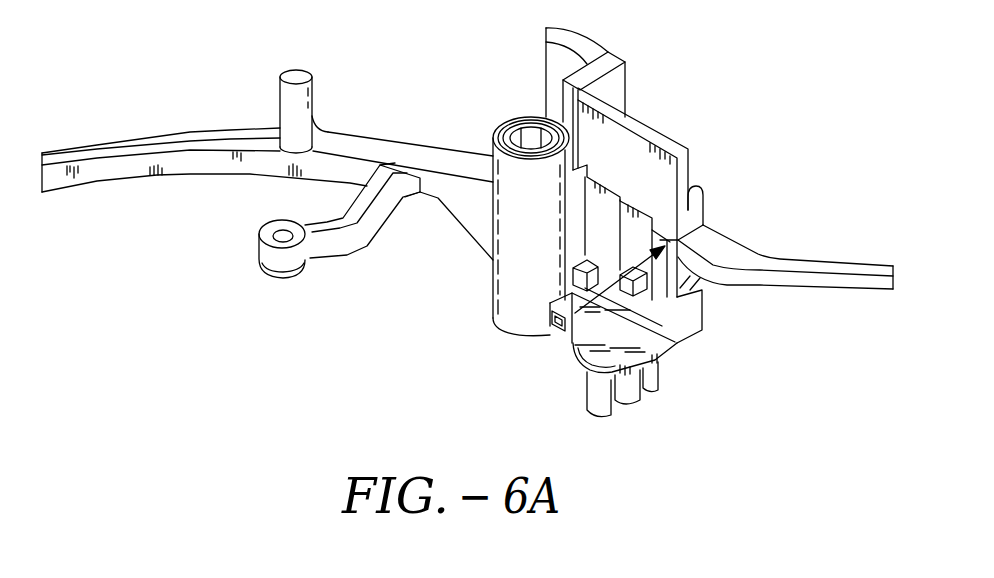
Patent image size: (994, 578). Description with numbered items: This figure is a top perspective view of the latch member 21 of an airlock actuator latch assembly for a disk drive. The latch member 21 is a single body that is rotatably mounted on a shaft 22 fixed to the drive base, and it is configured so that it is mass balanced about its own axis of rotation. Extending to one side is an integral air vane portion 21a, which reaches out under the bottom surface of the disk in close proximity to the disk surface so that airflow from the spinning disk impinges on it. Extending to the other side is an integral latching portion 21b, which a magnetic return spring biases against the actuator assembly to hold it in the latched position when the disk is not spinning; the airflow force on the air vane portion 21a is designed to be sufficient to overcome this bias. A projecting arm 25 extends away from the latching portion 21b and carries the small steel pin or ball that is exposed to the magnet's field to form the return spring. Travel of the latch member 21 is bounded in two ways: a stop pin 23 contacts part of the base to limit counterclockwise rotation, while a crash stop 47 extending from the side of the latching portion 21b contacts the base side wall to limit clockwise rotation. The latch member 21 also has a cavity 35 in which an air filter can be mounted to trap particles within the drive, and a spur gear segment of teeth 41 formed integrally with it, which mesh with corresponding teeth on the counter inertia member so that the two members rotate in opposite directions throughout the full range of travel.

The latch member 21 is at (802, 54).
The air vane portion 21a is at (846, 262).
The latching portion 21b is at (118, 173).
The shaft 22 is at (520, 126).
The stop pin 23 is at (298, 70).
The projecting arm 25 is at (358, 257).
The cavity 35 is at (562, 318).
The gear teeth 41 is at (612, 403).
The crash stop 47 is at (318, 122).